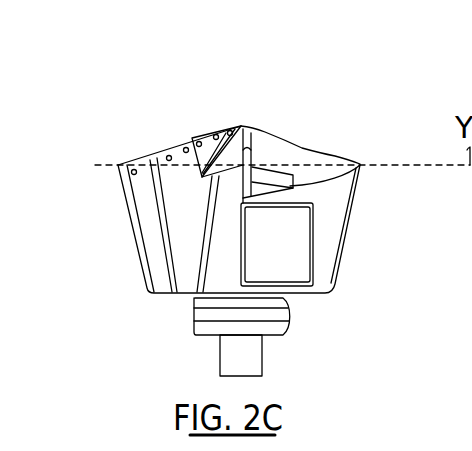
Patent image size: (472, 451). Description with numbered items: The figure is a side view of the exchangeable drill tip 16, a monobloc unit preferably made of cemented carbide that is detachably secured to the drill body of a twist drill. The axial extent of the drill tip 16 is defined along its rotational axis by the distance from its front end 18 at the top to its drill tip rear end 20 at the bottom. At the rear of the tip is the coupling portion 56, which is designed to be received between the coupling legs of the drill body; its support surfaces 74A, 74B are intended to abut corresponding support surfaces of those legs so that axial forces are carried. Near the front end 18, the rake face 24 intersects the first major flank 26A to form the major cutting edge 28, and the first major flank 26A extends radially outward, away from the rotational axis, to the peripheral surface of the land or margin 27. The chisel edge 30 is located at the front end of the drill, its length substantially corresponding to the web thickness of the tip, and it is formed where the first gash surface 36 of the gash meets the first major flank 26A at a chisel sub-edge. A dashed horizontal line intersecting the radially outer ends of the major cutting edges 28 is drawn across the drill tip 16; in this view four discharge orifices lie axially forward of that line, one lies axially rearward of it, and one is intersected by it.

The drill tip 16 is at (320, 115).
The front end 18 is at (239, 127).
The drill tip rear end 20 is at (243, 377).
The rake face 24 is at (140, 166).
The first major flank 26A is at (323, 163).
The land or margin 27 is at (353, 214).
The major cutting edge 28 is at (163, 158).
The chisel edge 30 is at (250, 127).
The first gash surface 36 is at (225, 128).
The coupling portion 56 is at (140, 300).
The support surface 74A is at (315, 293).
The support surface 74B is at (173, 297).